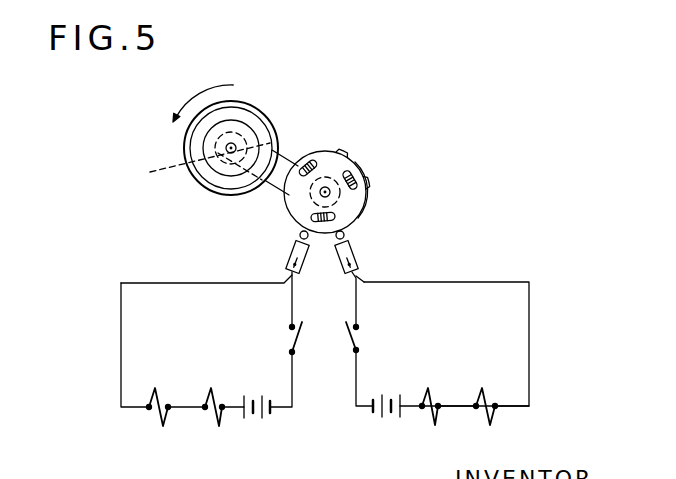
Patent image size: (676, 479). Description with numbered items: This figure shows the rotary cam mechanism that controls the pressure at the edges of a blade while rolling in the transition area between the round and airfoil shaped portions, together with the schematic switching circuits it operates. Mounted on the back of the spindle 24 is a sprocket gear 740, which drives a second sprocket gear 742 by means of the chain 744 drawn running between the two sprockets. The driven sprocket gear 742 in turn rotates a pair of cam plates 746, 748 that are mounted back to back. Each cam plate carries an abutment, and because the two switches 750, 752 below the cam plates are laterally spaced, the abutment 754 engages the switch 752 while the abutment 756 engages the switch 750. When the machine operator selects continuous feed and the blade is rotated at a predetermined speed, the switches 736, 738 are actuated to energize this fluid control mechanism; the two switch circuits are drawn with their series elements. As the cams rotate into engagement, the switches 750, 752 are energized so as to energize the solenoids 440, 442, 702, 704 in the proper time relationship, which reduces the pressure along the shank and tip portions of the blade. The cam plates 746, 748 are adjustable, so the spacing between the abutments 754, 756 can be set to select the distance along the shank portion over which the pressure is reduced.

The spindle 24 is at (250, 107).
The sprocket gear 740 is at (188, 163).
The sprocket gear 742 is at (325, 178).
The chain 744 is at (273, 184).
The cam plate 746 is at (358, 167).
The cam plate 748 is at (362, 208).
The switch 750 is at (355, 250).
The switch 752 is at (293, 253).
The abutment 754 is at (344, 151).
The abutment 756 is at (368, 182).
The switch 736 is at (295, 342).
The switch 738 is at (355, 340).
The solenoid 440 is at (157, 417).
The solenoid 442 is at (212, 412).
The solenoid 702 is at (430, 413).
The solenoid 704 is at (483, 417).